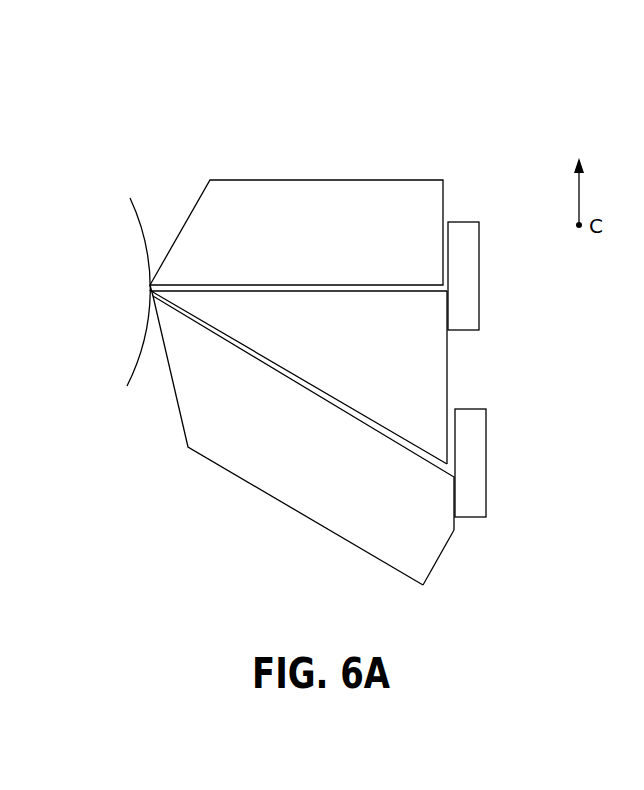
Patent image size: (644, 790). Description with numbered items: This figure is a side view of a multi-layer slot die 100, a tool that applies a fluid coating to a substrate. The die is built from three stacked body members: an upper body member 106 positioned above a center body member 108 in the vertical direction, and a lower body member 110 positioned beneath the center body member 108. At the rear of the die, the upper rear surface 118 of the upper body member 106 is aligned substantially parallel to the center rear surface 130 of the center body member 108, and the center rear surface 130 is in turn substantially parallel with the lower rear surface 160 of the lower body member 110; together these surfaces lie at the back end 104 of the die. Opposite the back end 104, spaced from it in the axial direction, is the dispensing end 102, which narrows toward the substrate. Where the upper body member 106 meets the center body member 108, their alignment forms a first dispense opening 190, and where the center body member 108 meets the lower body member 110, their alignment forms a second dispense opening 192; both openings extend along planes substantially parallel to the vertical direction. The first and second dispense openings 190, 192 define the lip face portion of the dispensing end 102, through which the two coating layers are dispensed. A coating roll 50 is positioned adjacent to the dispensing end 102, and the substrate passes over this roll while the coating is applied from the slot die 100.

The multi-layer slot die 100 is at (201, 89).
The upper body member 106 is at (238, 196).
The center body member 108 is at (312, 322).
The lower body member 110 is at (341, 510).
The upper rear surface 118 is at (449, 202).
The lower rear surface 160 is at (462, 498).
The center rear surface 130 is at (460, 393).
The back end 104 is at (462, 532).
The dispensing end 102 is at (143, 305).
The first dispense opening 190 is at (142, 282).
The second dispense opening 192 is at (146, 290).
The coating roll 50 is at (128, 398).